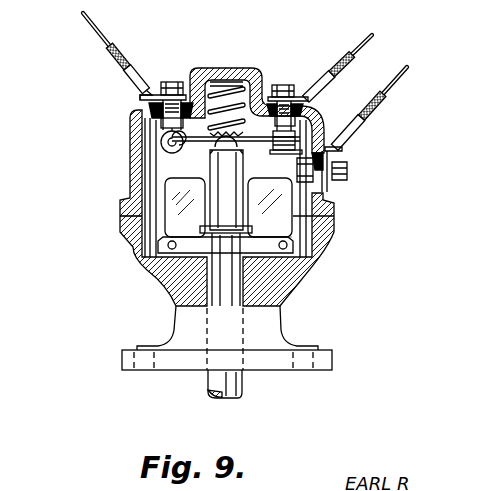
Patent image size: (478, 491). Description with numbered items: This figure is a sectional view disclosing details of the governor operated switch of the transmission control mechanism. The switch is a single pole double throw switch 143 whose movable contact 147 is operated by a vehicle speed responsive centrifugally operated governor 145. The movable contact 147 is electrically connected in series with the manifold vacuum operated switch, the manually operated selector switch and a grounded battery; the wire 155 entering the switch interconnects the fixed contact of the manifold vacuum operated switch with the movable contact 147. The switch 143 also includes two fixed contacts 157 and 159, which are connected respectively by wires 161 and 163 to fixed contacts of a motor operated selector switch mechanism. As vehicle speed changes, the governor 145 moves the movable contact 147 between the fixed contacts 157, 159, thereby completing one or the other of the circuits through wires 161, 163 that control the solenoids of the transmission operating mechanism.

The single pole double throw switch 143 is at (112, 156).
The vehicle speed responsive centrifugally operated governor 145 is at (318, 305).
The movable contact 147 is at (254, 138).
The wire 155 is at (81, 30).
The fixed contact 157 is at (330, 150).
The fixed contact 159 is at (322, 120).
The wire 161 is at (405, 70).
The wire 163 is at (372, 32).